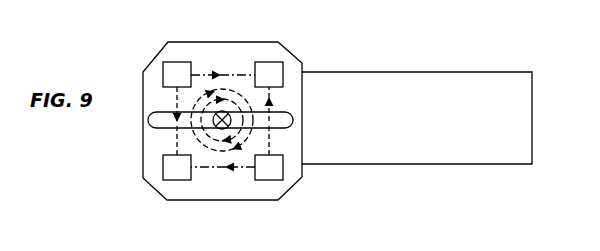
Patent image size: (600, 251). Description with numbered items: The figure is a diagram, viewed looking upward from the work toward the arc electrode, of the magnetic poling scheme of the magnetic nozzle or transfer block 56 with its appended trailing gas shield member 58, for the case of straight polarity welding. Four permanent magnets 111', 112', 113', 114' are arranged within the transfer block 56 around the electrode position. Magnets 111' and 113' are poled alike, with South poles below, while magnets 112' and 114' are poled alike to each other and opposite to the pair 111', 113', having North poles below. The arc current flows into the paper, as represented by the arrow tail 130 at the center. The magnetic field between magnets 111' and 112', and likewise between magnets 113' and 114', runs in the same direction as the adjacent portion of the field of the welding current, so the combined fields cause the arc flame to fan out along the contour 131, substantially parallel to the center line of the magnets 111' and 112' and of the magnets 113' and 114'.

The magnetic nozzle or transfer block 56 is at (293, 50).
The trailing gas shield member 58 is at (466, 80).
The permanent magnet 111' is at (293, 43).
The permanent magnet 112' is at (150, 51).
The permanent magnet 113' is at (147, 183).
The permanent magnet 114' is at (305, 183).
The arrow tail 130 is at (233, 119).
The contour 131 is at (152, 121).